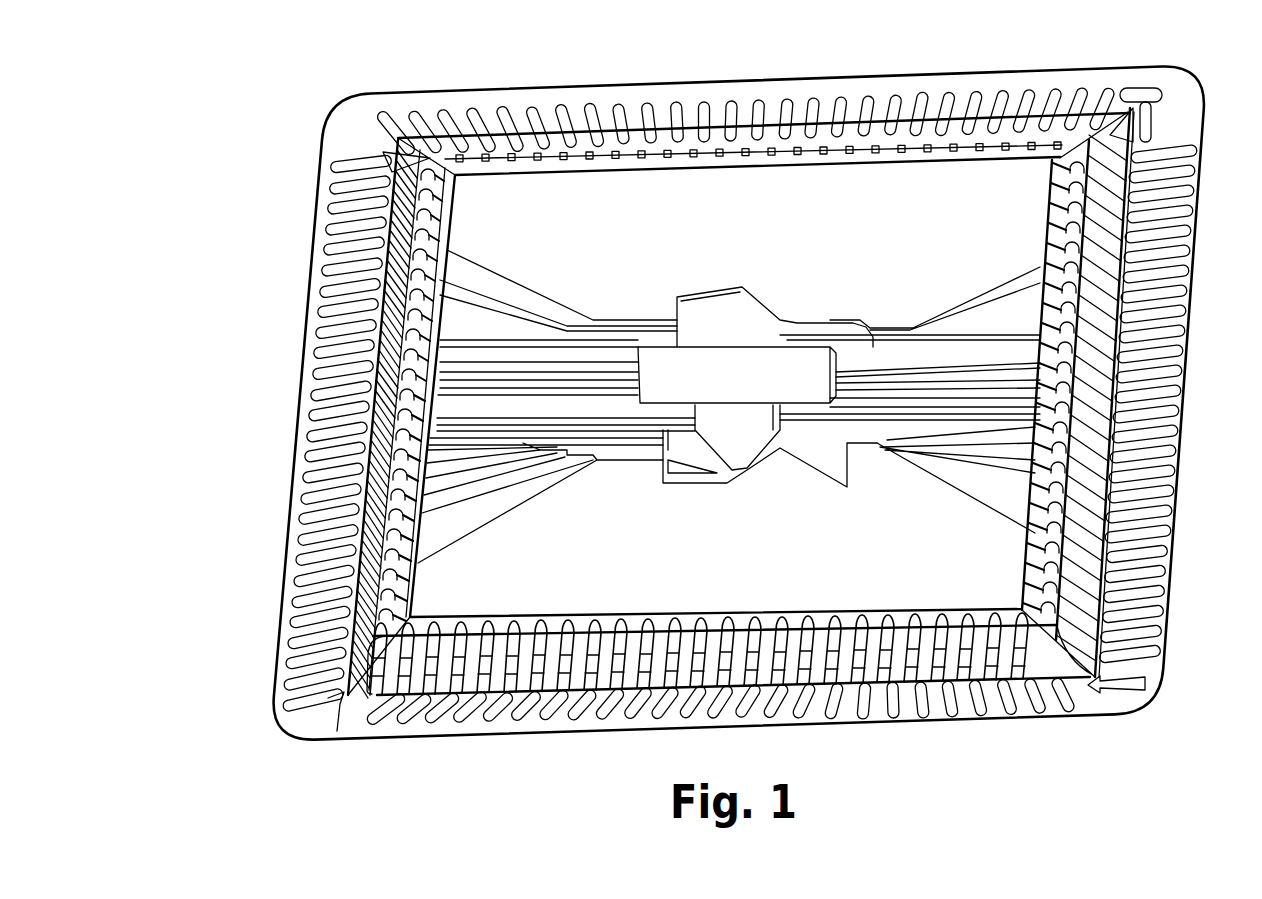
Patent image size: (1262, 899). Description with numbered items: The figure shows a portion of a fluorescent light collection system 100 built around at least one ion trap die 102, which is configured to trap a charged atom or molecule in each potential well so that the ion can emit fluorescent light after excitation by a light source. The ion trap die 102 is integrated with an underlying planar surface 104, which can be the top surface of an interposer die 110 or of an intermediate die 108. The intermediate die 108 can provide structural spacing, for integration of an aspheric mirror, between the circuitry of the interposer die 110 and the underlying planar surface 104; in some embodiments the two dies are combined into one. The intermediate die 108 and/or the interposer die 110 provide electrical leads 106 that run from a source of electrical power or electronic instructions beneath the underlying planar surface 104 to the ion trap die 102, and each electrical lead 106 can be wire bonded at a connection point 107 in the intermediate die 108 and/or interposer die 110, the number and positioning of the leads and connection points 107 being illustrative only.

The fluorescent light collection system 100 is at (252, 92).
The ion trap die 102 is at (653, 357).
The underlying planar surface 104 is at (760, 229).
The electrical leads 106 is at (884, 483).
The connection point 107 is at (373, 323).
The intermediate die 108 is at (430, 168).
The interposer die 110 is at (318, 194).